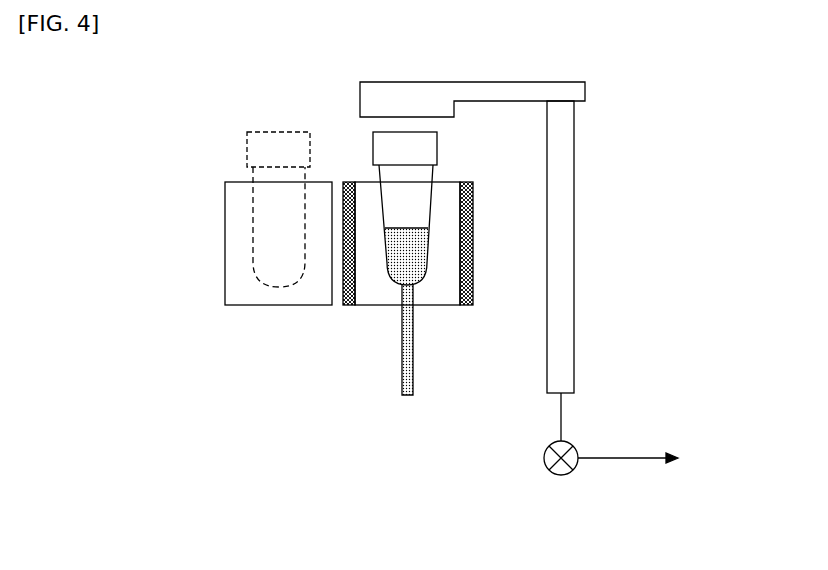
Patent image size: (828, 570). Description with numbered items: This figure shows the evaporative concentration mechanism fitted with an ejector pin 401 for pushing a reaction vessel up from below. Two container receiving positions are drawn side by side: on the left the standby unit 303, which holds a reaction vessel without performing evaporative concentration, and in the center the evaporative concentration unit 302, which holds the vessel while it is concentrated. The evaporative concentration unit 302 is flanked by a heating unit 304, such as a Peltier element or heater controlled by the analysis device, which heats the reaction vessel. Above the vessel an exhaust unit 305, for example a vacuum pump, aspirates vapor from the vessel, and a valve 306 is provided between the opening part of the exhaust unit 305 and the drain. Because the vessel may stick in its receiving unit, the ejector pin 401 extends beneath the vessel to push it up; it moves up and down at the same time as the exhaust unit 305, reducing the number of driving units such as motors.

The evaporative concentration unit 302 is at (368, 302).
The standby unit 303 is at (283, 302).
The heating unit 304 is at (470, 302).
The exhaust unit 305 is at (399, 88).
The valve 306 is at (553, 474).
The ejector pin 401 is at (410, 397).